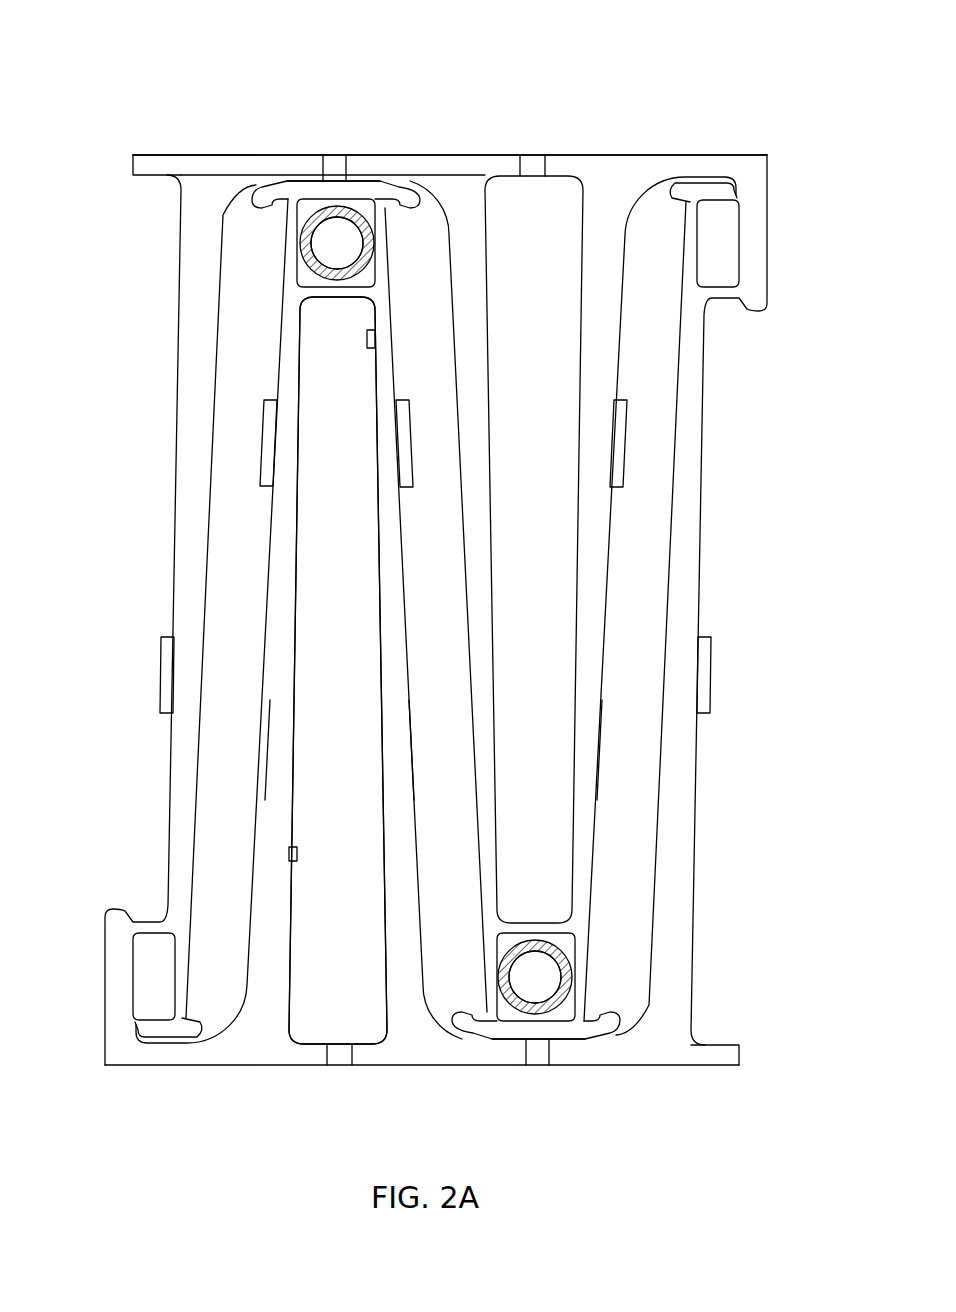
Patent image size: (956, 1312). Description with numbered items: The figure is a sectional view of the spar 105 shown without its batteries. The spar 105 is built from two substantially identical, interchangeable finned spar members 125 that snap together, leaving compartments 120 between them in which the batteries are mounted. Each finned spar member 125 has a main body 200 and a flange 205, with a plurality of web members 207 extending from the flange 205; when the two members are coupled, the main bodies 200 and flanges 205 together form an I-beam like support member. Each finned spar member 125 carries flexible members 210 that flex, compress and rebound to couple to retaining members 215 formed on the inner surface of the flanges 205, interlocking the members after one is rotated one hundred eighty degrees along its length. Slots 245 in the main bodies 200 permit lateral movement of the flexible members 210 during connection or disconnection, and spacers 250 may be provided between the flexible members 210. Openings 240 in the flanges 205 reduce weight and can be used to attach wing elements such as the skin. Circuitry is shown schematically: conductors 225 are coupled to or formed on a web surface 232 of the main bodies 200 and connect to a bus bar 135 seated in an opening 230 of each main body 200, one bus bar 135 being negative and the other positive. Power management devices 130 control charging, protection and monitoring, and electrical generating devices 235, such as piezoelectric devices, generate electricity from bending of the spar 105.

The spar 105 is at (700, 54).
The finned spar member 125 is at (620, 165).
The flange 205 is at (180, 160).
The main body 200 is at (582, 380).
The web member 207 is at (483, 578).
The opening 240 is at (330, 160).
The retaining member 215 is at (262, 187).
The slot 245 is at (333, 182).
The compartment 120 is at (430, 212).
The web surface 232 is at (268, 755).
The opening 230 is at (378, 280).
The spacer 250 is at (300, 264).
The bus bar 135 is at (337, 255).
The flexible member 210 is at (286, 222).
The conductor 225 is at (265, 450).
The power management device 130 is at (163, 700).
The electrical generating device 235 is at (368, 348).